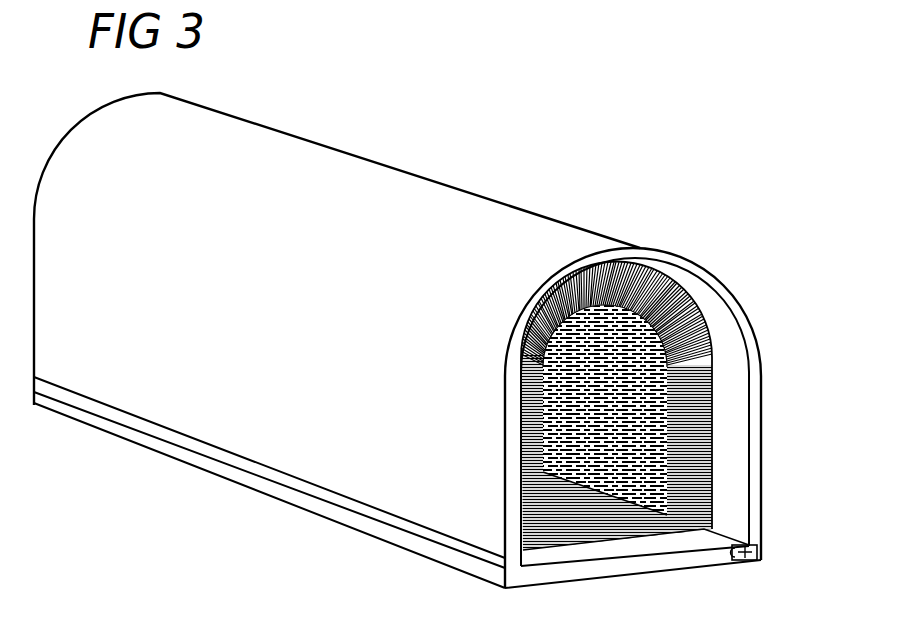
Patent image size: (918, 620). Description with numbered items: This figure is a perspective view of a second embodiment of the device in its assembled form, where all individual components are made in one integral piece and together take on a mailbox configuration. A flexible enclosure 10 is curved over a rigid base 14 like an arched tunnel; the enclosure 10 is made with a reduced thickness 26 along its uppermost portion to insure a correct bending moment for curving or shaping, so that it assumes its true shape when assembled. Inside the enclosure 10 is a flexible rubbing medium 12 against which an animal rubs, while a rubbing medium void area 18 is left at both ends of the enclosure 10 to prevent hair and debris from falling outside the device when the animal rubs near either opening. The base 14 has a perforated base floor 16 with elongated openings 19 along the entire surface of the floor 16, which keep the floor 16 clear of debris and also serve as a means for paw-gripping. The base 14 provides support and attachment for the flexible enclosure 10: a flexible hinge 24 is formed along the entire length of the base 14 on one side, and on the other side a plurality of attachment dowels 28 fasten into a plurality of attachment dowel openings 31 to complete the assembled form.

The flexible enclosure 10 is at (567, 160).
The flexible rubbing medium 12 is at (704, 482).
The rigid base 14 is at (602, 570).
The perforated base floor 16 is at (560, 555).
The rubbing medium void area 18 is at (722, 380).
The elongated openings 19 is at (645, 525).
The flexible hinge 24 is at (448, 546).
The reduced thickness 26 is at (620, 252).
The attachment dowels 28 is at (748, 562).
The attachment dowel openings 31 is at (757, 549).